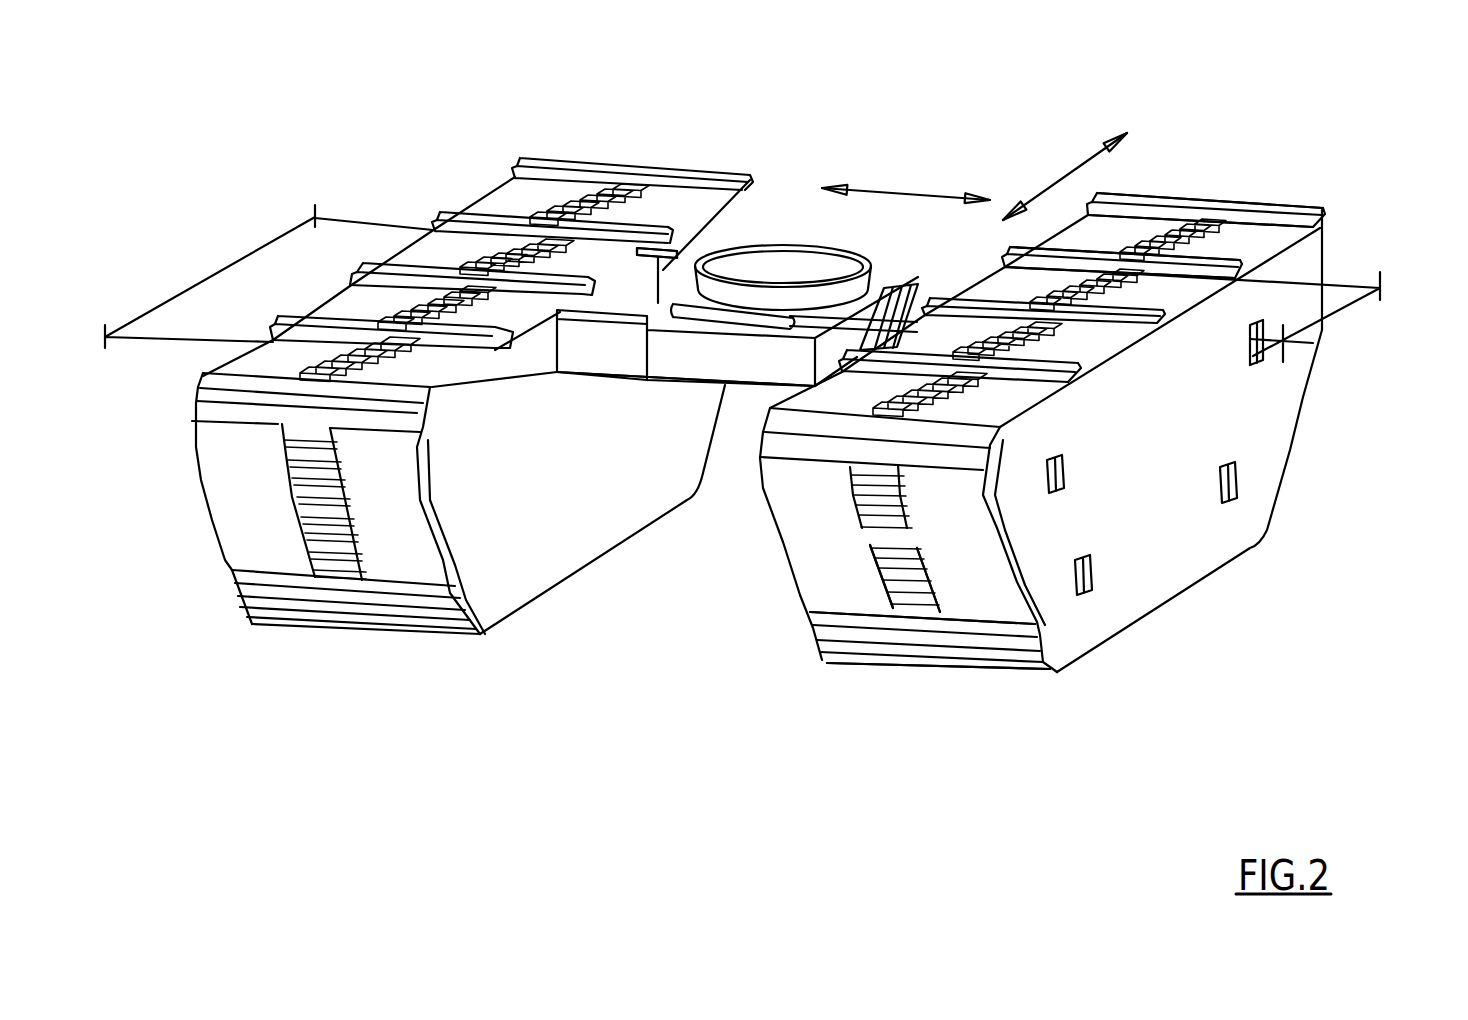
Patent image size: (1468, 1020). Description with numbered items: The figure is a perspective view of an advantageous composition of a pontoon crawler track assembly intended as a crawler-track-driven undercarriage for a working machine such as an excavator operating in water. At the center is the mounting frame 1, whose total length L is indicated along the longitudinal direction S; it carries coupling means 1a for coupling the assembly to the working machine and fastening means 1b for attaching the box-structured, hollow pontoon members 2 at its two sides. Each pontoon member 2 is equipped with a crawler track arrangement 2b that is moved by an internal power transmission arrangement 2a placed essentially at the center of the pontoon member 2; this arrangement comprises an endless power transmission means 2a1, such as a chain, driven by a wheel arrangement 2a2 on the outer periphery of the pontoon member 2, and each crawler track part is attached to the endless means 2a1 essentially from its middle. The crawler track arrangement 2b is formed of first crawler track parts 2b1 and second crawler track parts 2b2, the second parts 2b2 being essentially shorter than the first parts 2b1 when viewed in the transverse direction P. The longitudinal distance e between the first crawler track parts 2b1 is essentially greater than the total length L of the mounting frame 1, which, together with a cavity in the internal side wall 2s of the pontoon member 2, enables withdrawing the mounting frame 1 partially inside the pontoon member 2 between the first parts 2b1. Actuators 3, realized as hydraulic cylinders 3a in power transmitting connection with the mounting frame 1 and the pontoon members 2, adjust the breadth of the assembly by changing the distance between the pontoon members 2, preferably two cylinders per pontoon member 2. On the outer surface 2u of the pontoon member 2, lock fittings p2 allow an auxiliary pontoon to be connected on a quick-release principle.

The mounting frame 1 is at (744, 392).
The coupling means 1a is at (789, 256).
The fastening means 1b is at (598, 378).
The pontoon member 2 is at (1180, 583).
The power transmission arrangement 2a is at (880, 657).
The endless power transmission means 2a1 is at (995, 657).
The wheel arrangement 2a2 is at (925, 590).
The crawler track arrangement 2b is at (1205, 148).
The first crawler track parts 2b1 is at (1290, 203).
The second crawler track parts 2b2 is at (1163, 222).
The internal side wall 2s is at (512, 468).
The outer surface 2u is at (1167, 426).
The actuators 3 is at (677, 181).
The hydraulic cylinders 3a is at (887, 257).
The lock fittings p2 is at (1257, 363).
The longitudinal distance e is at (1355, 303).
The total length L is at (252, 253).
The transverse direction P is at (880, 190).
The longitudinal direction S is at (1060, 183).